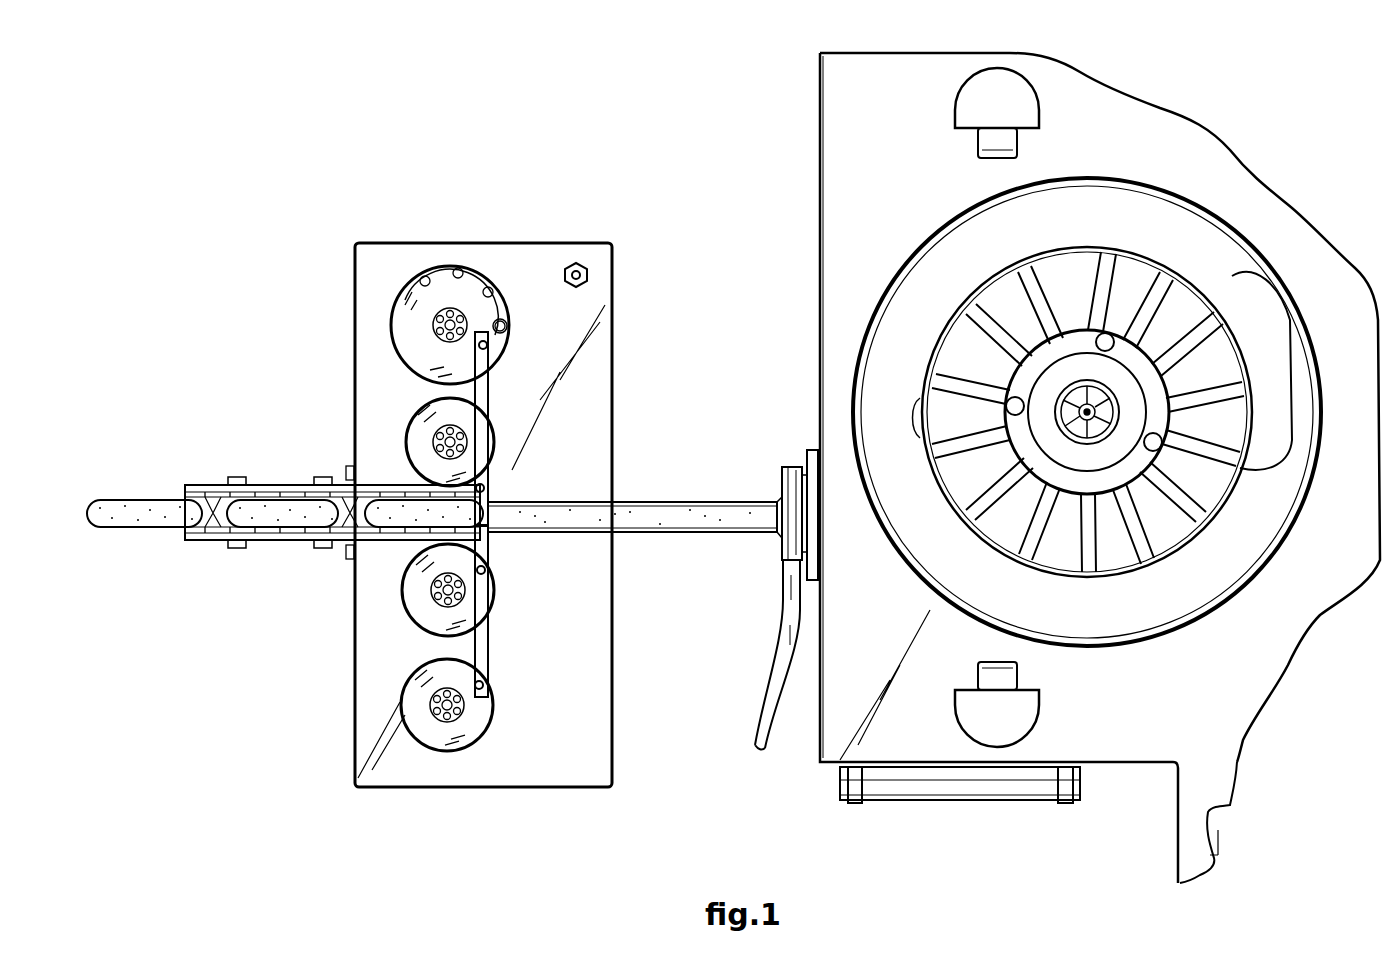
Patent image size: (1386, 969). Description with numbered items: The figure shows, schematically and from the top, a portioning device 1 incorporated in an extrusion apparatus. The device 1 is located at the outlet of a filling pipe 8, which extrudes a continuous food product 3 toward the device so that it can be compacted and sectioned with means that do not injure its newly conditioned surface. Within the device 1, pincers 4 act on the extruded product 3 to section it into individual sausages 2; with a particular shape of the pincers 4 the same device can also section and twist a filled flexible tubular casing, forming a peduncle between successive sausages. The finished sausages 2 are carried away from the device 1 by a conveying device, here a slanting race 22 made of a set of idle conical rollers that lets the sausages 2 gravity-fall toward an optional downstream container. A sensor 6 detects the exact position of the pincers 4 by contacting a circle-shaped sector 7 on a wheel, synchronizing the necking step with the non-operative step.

The portioning device 1 is at (544, 240).
The sausages 2 is at (265, 487).
The slanting race 22 is at (185, 531).
The food product 3 is at (372, 545).
The pincers 4 is at (489, 400).
The sensor 6 is at (508, 326).
The circle-shaped sector 7 is at (440, 272).
The filling pipe 8 is at (700, 501).